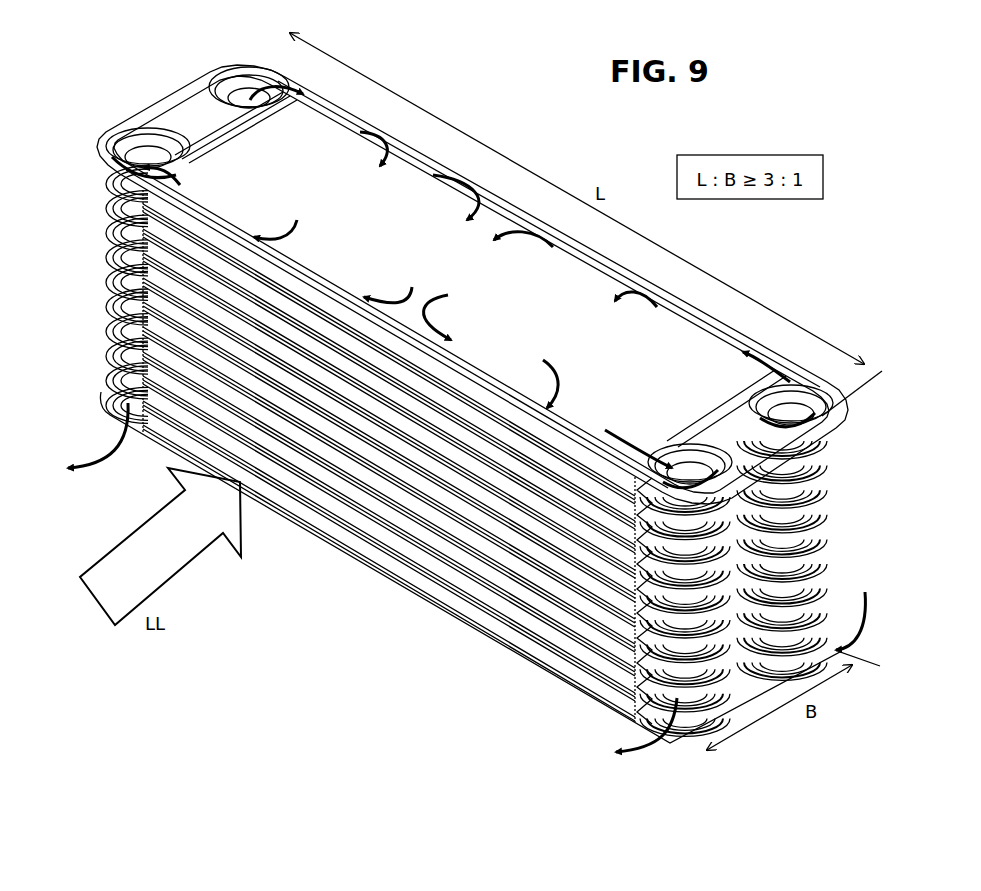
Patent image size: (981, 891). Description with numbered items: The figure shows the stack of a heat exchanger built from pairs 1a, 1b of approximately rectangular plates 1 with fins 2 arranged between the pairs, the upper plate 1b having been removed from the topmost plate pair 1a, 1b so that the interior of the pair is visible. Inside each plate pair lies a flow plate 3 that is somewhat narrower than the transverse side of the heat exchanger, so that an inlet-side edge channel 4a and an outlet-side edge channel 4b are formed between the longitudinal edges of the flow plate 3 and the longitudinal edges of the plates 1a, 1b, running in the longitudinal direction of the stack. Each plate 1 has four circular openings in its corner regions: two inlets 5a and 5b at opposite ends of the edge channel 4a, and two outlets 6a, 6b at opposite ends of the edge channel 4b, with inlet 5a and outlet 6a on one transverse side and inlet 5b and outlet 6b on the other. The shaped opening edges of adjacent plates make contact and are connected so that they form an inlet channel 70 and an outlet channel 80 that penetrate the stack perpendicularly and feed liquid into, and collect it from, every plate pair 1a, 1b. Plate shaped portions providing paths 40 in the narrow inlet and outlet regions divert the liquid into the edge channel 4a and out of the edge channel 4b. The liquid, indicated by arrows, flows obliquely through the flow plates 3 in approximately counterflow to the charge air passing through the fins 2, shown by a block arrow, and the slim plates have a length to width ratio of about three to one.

The plate 1 is at (745, 403).
The lower plate of plate pair 1a is at (470, 602).
The upper plate of plate pair 1b is at (477, 603).
The fins 2 is at (410, 520).
The flow plate 3 is at (509, 303).
The inlet-side edge channel 4a is at (485, 210).
The outlet-side edge channel 4b is at (467, 360).
The inlet 5a is at (790, 408).
The inlet 5b is at (225, 92).
The outlet 6a is at (824, 412).
The outlet 6b is at (130, 150).
The paths 40 is at (227, 107).
The inlet channel 70 is at (805, 487).
The outlet channel 80 is at (677, 622).